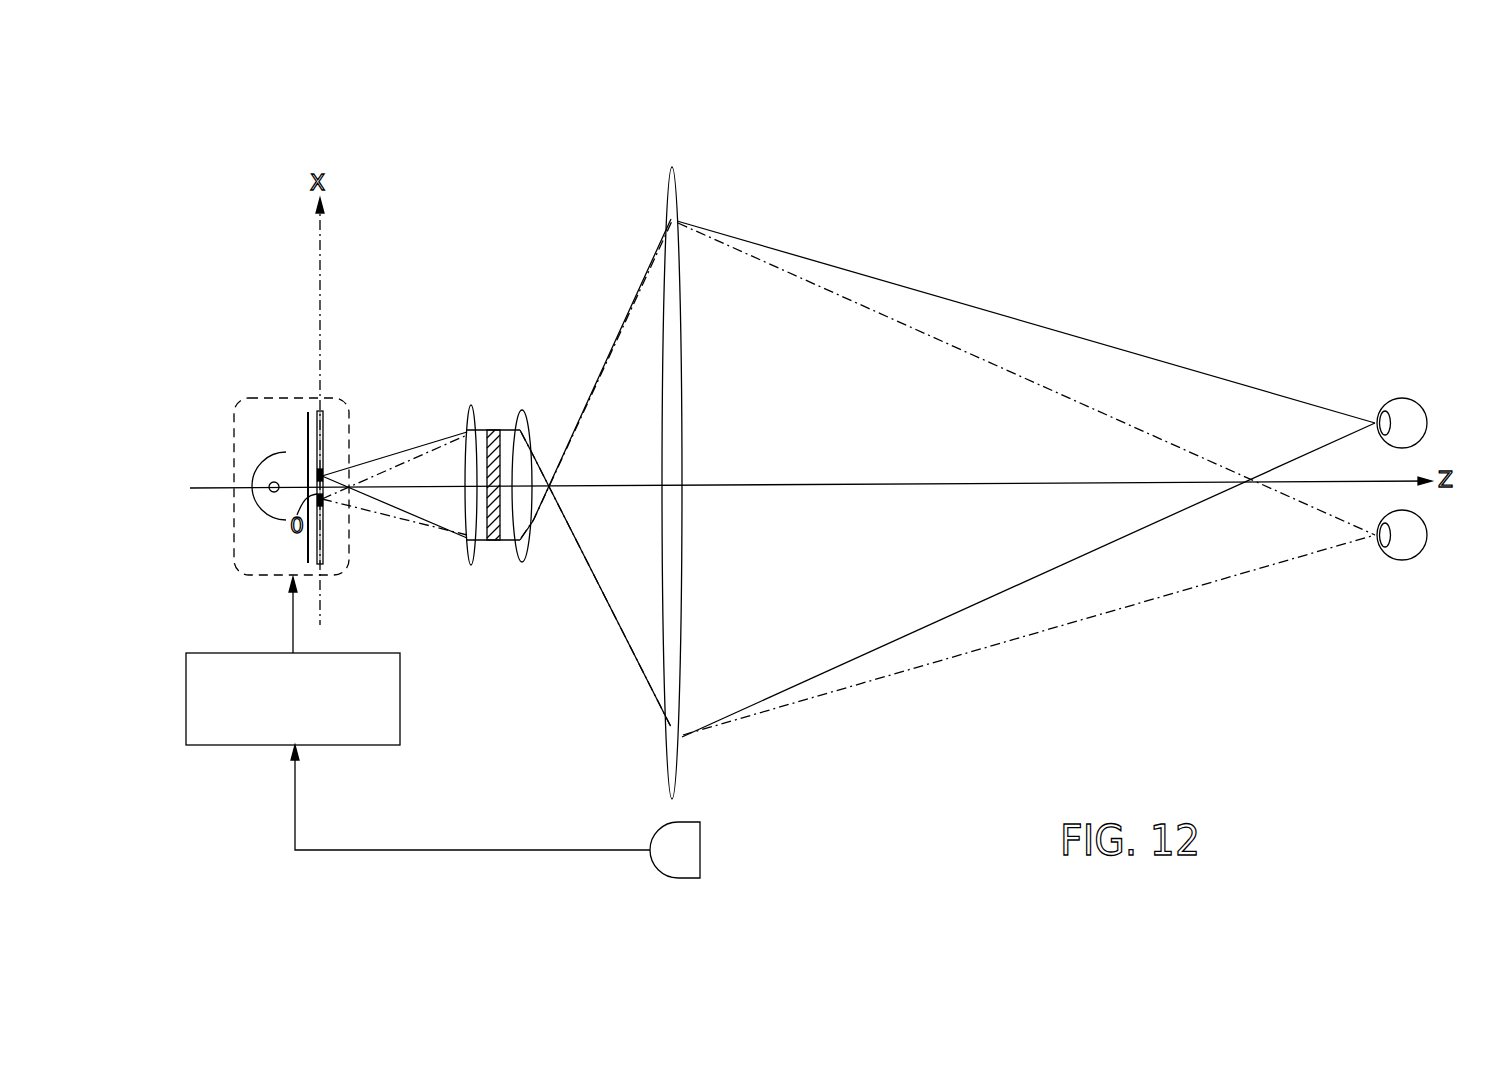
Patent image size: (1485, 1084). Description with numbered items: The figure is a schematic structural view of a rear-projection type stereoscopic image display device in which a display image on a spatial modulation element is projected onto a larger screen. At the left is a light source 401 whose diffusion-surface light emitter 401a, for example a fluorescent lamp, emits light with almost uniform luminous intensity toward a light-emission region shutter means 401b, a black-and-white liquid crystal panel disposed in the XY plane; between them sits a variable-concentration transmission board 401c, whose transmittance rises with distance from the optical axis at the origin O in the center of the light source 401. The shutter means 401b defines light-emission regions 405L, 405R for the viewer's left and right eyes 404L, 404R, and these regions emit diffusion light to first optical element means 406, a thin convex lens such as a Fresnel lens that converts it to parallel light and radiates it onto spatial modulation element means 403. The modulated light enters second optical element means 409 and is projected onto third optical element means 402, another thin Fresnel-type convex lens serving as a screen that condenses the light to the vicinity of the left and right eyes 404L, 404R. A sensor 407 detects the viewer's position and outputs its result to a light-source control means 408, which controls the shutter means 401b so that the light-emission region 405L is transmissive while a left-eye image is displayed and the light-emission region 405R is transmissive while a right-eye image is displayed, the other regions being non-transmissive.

The light source 401 is at (250, 577).
The diffusion-surface light emitter 401a is at (285, 452).
The light-emission region shutter means 401b is at (318, 408).
The variable-concentration transmission board 401c is at (307, 440).
The third optical element means 402 is at (677, 195).
The spatial modulation element means 403 is at (495, 540).
The right eye 404R is at (1401, 398).
The left eye 404L is at (1402, 560).
The light-emission region 405R is at (323, 475).
The light-emission region 405L is at (323, 500).
The first optical element means 406 is at (470, 404).
The sensor 407 is at (700, 842).
The light-source control means 408 is at (362, 745).
The second optical element means 409 is at (520, 408).